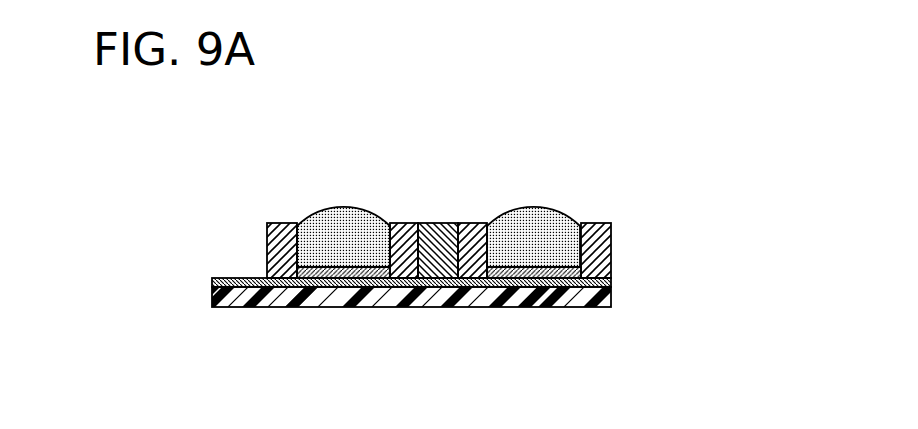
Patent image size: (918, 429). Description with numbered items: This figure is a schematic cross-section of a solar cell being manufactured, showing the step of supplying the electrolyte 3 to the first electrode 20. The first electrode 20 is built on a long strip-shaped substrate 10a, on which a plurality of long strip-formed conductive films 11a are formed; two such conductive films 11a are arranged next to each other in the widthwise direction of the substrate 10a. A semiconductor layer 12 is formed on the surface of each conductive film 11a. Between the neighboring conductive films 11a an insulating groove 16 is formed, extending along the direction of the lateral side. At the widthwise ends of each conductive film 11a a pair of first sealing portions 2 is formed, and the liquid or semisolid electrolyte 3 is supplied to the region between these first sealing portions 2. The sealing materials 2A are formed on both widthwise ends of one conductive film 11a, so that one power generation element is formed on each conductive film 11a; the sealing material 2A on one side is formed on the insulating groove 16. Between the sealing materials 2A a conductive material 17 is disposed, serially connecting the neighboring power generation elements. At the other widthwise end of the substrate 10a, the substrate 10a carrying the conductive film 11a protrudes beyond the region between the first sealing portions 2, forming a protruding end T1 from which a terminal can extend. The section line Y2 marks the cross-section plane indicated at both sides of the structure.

The first sealing portion 2 is at (394, 233).
The sealing material 2A is at (272, 236).
The electrolyte 3 is at (355, 230).
The semiconductor layer 12 is at (308, 266).
The conductive material 17 is at (439, 235).
The insulating groove 16 is at (395, 283).
The substrate 10a is at (460, 297).
The conductive film 11a is at (311, 288).
The first electrode 20 is at (675, 269).
The protruding end T1 is at (232, 288).
The cross-section line Y2 is at (225, 253).